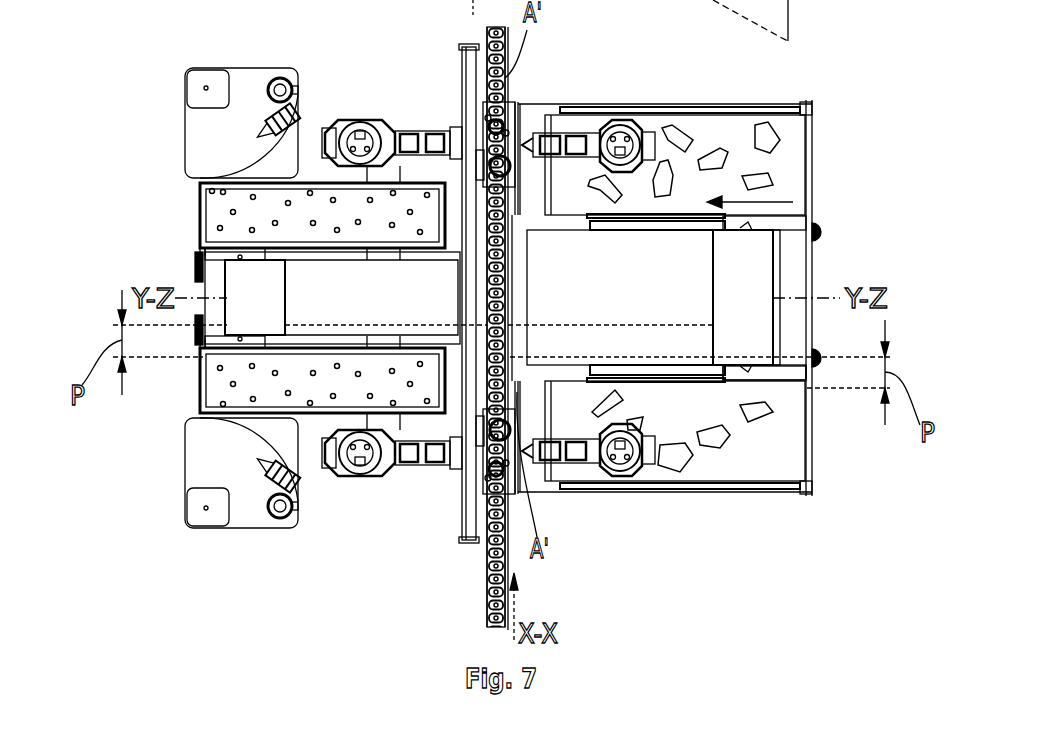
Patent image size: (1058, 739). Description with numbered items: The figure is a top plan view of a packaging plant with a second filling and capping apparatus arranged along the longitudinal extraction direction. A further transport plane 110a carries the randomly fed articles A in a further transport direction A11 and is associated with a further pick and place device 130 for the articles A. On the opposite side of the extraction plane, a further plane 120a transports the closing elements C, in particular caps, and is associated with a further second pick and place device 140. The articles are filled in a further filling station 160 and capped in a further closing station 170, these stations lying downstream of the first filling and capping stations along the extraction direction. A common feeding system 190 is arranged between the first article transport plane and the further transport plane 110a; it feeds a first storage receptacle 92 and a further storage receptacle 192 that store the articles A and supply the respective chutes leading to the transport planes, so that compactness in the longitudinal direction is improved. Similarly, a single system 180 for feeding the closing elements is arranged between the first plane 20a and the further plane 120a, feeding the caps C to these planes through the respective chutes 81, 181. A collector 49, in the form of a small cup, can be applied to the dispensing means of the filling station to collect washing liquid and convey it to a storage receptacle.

The further second pick and place device 140 is at (337, 126).
The further filling station 160 is at (462, 72).
The further closing station 170 is at (478, 128).
The further storage receptacle 192 is at (530, 118).
The further pick and place device 130 is at (633, 130).
The further transport plane 110a is at (705, 128).
The article A is at (770, 140).
The further transport direction A11 is at (775, 202).
The closing element C is at (210, 192).
The further plane for transporting closing elements 120a is at (217, 215).
The further chute 181 is at (203, 247).
The chute 81 is at (200, 345).
The single system for feeding the closing elements 180 is at (392, 312).
The feeding system 190 is at (640, 312).
The transport plane for closing elements 20a is at (292, 412).
The collector 49 is at (285, 516).
The storage receptacle 92 is at (537, 478).